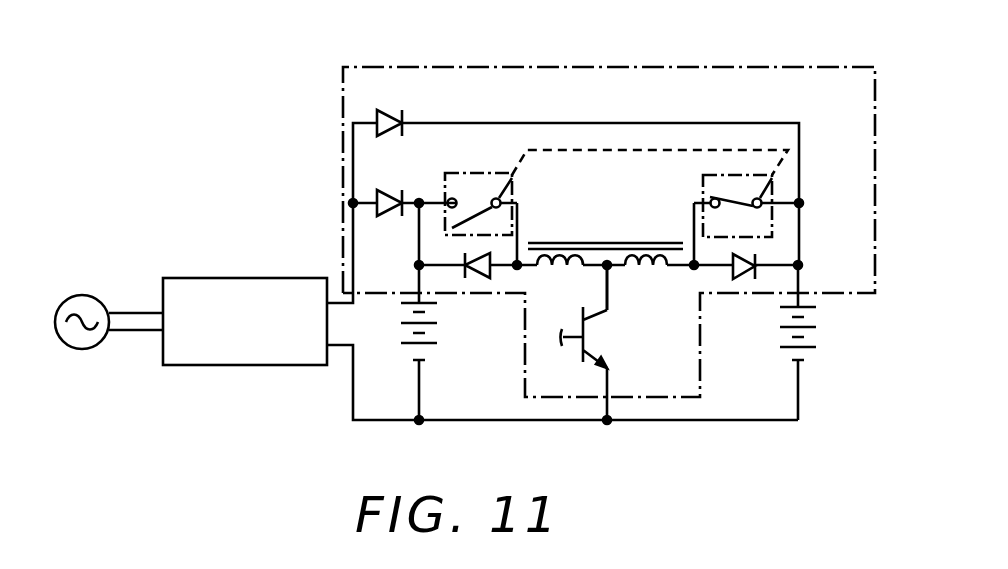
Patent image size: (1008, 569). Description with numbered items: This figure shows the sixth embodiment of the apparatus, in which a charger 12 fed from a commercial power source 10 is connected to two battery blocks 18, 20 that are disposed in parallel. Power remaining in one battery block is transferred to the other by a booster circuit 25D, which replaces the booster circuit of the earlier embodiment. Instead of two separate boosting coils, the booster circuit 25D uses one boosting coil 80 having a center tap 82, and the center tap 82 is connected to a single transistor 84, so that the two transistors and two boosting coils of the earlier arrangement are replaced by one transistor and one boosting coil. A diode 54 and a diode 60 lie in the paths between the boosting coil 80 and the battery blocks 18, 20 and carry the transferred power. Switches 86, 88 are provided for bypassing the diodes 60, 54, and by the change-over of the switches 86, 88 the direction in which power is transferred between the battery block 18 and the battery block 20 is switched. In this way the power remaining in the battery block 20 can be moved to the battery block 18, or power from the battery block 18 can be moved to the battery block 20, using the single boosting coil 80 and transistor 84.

The commercial power source 10 is at (78, 293).
The charger 12 is at (248, 278).
The booster circuit 25D is at (487, 67).
The battery block 18 is at (438, 336).
The battery block 20 is at (818, 335).
The diode 54 is at (478, 280).
The diode 60 is at (739, 282).
The boosting coil 80 is at (578, 243).
The center tap 82 is at (612, 270).
The transistor 84 is at (600, 330).
The switch 86 is at (454, 173).
The switch 88 is at (700, 187).